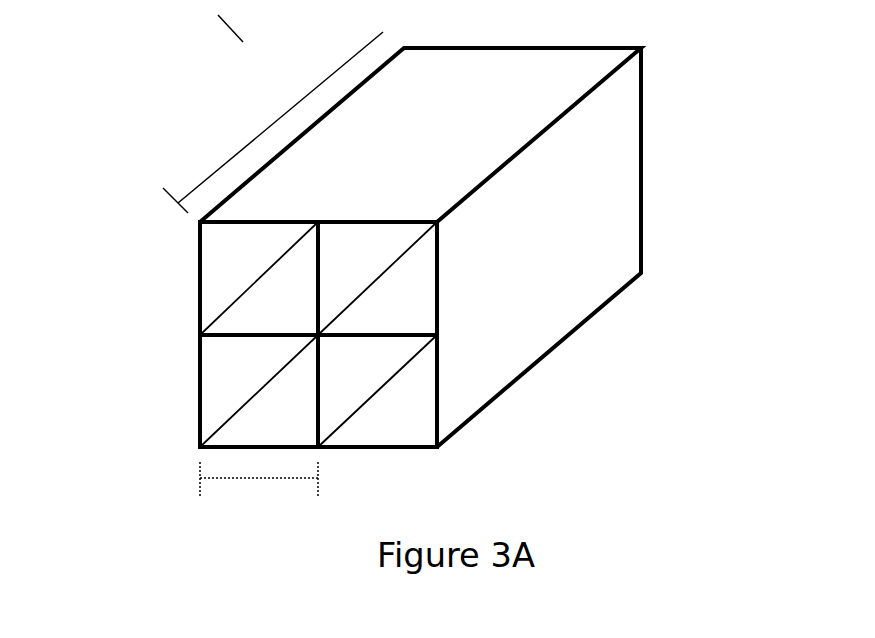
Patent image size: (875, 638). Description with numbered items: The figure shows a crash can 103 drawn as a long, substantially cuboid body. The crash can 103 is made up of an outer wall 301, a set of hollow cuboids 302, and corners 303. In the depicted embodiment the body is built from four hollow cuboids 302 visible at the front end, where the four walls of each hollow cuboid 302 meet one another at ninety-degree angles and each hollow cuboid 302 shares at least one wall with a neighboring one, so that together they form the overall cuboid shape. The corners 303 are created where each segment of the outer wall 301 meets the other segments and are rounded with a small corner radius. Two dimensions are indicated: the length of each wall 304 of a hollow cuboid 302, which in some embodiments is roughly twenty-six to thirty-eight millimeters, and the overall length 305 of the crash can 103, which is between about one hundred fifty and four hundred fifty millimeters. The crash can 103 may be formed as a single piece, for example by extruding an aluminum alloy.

The crash can 103 is at (500, 92).
The outer wall 301 is at (547, 243).
The hollow cuboids 302 is at (240, 310).
The corners 303 is at (440, 448).
The length of each wall 304 is at (259, 493).
The length of crash can 305 is at (273, 114).